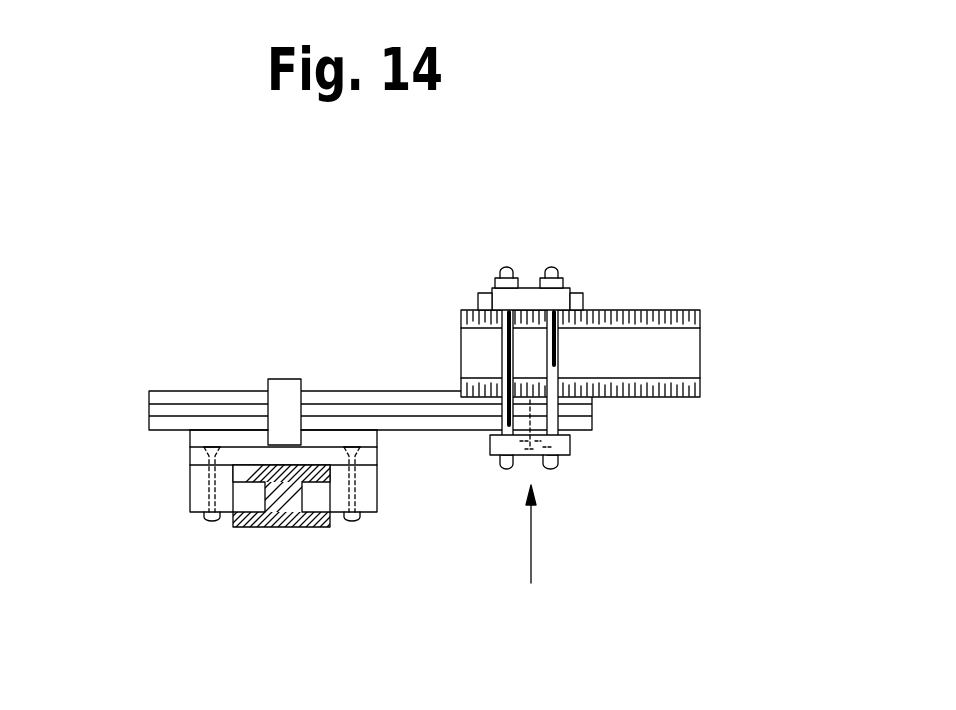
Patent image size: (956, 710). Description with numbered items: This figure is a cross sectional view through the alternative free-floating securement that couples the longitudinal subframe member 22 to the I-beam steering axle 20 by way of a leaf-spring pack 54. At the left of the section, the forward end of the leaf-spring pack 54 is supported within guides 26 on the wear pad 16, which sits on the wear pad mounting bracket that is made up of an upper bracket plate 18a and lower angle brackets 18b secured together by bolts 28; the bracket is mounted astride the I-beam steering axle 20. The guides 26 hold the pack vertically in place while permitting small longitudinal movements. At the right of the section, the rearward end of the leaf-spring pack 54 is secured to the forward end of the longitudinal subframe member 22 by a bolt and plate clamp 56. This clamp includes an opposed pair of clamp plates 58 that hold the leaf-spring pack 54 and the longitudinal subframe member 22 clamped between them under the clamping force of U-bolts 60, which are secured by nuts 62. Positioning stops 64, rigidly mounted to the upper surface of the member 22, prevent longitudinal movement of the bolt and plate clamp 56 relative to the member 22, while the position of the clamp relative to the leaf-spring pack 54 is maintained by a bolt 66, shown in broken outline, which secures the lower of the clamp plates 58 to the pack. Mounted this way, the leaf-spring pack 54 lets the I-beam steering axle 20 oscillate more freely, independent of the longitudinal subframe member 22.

The wear pad 16 is at (197, 438).
The upper bracket plate 18a is at (197, 457).
The lower angle brackets 18b is at (202, 483).
The I-beam steering axle 20 is at (275, 517).
The longitudinal subframe member 22 is at (472, 348).
The guides 26 is at (285, 398).
The bolts 28 is at (208, 520).
The leaf-spring pack 54 is at (187, 397).
The bolt and plate clamp 56 is at (535, 551).
The clamp plates 58 is at (563, 297).
The U-bolts 60 is at (548, 360).
The nuts 62 is at (546, 270).
The positioning stops 64 is at (483, 291).
The bolt 66 is at (533, 440).